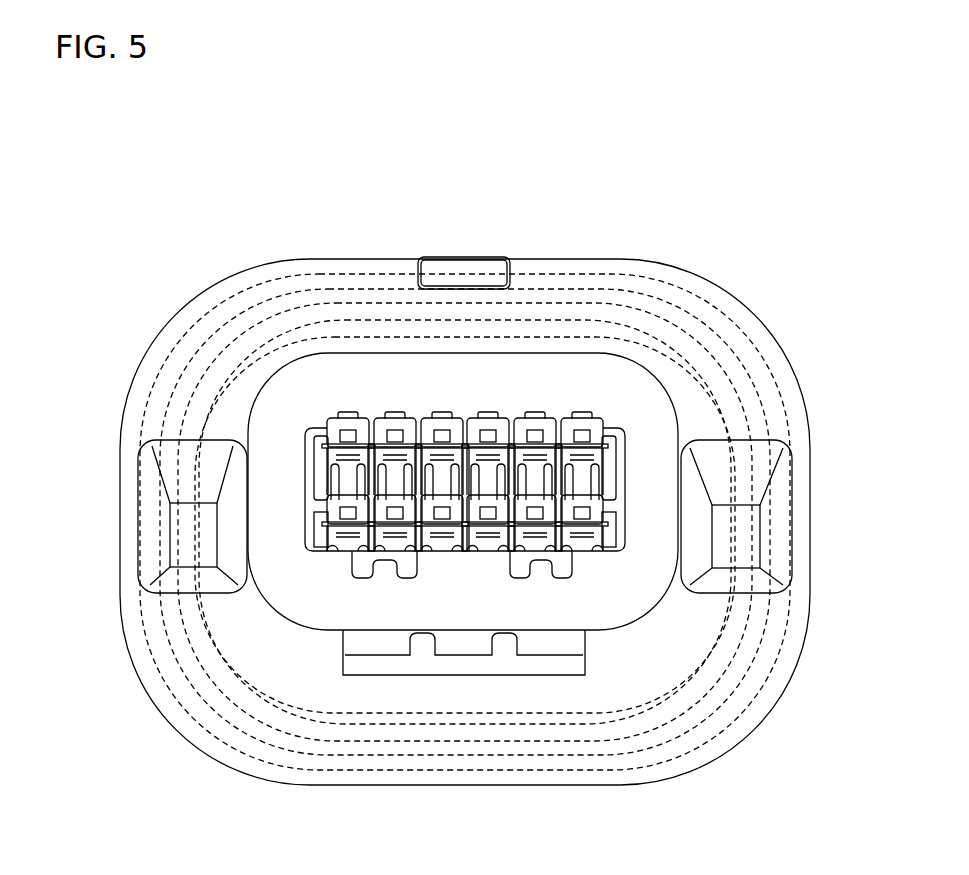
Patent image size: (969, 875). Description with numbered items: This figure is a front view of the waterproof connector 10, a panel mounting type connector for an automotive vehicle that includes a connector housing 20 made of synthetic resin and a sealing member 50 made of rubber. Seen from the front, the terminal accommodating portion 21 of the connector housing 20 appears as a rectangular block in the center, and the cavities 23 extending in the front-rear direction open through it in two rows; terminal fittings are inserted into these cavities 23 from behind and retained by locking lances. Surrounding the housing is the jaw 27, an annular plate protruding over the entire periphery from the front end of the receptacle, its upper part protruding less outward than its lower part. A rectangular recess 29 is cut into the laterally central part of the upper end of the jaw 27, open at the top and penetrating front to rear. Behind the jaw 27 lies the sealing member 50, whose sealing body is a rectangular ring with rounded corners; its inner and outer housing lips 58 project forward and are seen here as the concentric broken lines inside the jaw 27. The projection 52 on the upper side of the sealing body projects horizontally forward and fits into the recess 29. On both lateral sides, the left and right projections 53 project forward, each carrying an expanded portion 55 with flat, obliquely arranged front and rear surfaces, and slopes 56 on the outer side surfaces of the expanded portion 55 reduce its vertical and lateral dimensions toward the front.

The waterproof connector 10 is at (480, 123).
The connector housing 20 is at (374, 259).
The terminal accommodating portion 21 is at (642, 425).
The cavities 23 is at (347, 434).
The jaw 27 is at (575, 260).
The recess 29 is at (450, 288).
The sealing member 50 is at (313, 272).
The projection 52 is at (478, 268).
The left and right projections 53 is at (140, 495).
The expanded portion 55 is at (207, 440).
The slopes 56 is at (155, 530).
The housing lips 58 is at (620, 335).